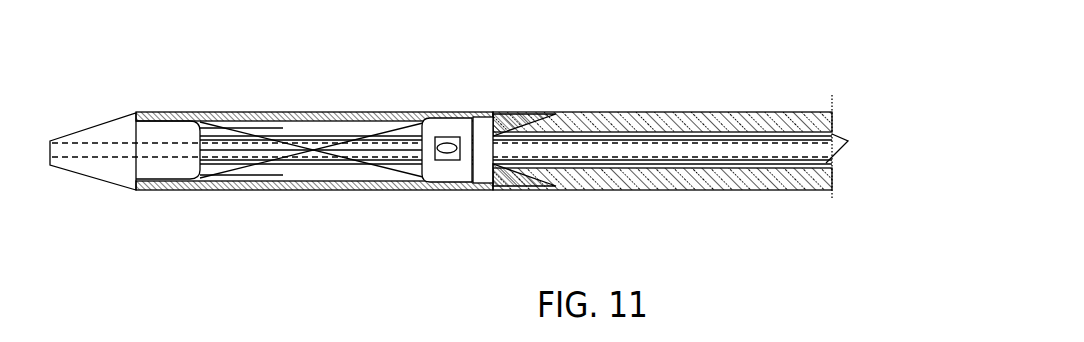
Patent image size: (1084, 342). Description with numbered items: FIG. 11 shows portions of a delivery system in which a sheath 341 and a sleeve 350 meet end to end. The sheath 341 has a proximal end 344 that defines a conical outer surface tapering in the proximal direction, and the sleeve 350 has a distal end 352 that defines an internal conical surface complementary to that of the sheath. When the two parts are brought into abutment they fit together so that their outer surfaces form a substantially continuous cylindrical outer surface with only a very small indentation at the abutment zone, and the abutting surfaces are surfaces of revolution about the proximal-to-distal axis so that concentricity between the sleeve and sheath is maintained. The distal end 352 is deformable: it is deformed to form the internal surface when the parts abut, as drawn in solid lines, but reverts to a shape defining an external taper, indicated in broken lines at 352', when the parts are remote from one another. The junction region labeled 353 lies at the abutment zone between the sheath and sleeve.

The sheath 341 is at (300, 100).
The proximal end 344 is at (490, 188).
The sleeve 350 is at (666, 99).
The distal end 352 is at (386, 105).
The distal end in reverted shape 352' is at (417, 118).
The coupling 353 is at (502, 111).